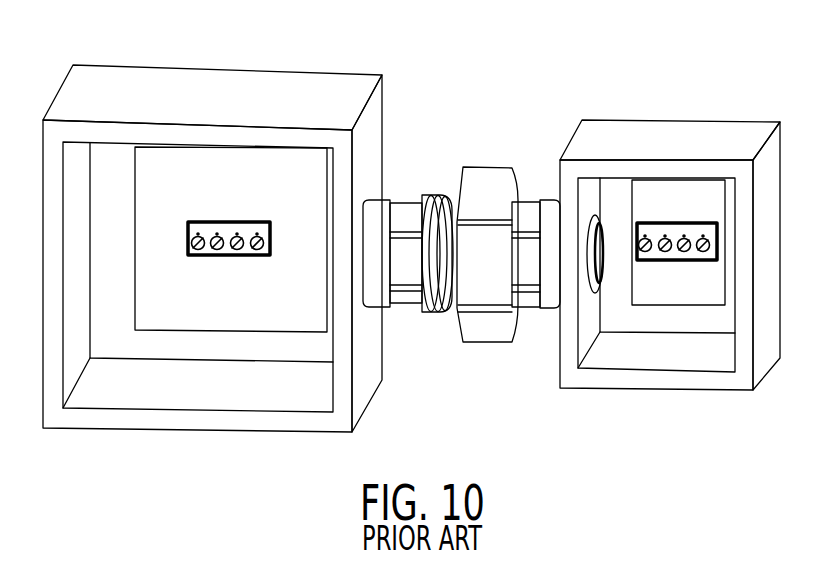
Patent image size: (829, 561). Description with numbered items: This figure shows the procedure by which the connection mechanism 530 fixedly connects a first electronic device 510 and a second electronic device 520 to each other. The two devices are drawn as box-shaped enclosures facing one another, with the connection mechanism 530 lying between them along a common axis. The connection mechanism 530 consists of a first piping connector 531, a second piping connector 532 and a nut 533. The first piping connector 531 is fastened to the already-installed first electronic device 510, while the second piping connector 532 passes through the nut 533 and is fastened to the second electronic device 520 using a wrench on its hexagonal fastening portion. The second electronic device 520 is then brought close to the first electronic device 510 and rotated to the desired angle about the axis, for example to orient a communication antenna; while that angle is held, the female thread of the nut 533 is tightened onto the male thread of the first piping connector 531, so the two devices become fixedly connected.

The first electronic device 510 is at (277, 82).
The second electronic device 520 is at (672, 132).
The connection mechanism 530 is at (543, 163).
The first piping connector 531 is at (408, 300).
The second piping connector 532 is at (523, 302).
The nut 533 is at (487, 332).